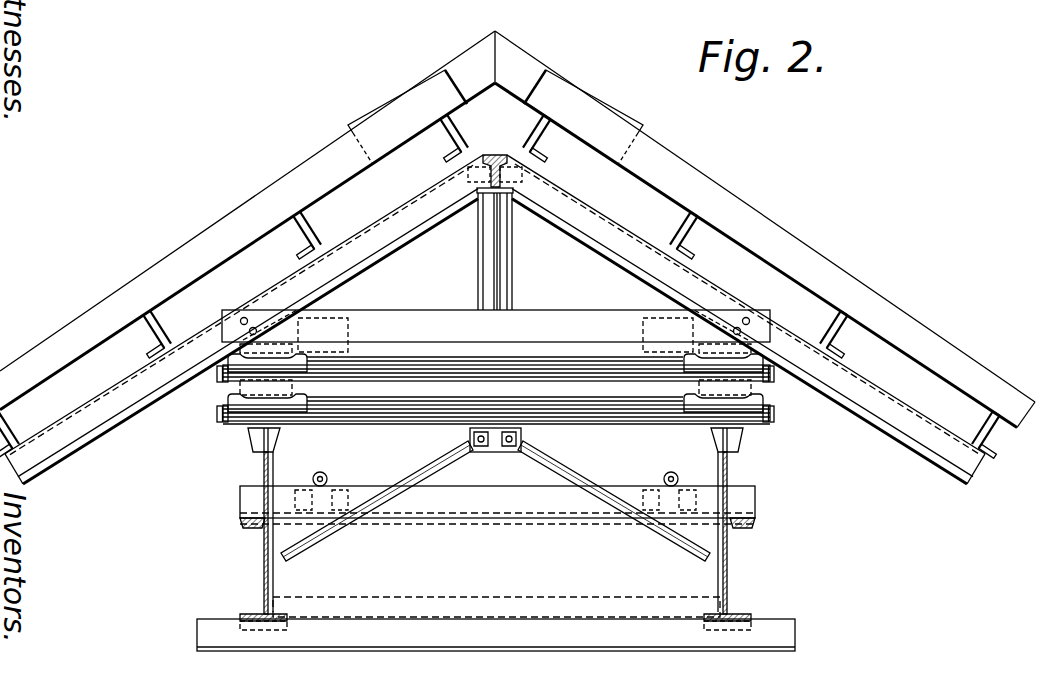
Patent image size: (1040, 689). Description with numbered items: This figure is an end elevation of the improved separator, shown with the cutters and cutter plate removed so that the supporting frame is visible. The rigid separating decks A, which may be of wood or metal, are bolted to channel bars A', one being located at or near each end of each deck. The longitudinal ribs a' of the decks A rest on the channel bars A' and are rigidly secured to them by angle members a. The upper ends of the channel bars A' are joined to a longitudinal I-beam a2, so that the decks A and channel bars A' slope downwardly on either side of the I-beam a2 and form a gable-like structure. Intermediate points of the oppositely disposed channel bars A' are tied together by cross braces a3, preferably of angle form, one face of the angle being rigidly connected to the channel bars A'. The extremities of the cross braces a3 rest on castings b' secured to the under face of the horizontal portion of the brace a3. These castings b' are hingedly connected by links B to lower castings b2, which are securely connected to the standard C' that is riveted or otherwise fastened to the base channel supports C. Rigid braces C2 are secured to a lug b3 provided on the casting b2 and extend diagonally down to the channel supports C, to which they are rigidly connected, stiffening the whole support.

The separating deck A is at (517, 229).
The channel bar A' is at (495, 335).
The angle member a is at (498, 264).
The longitudinal rib a' is at (511, 286).
The longitudinal I-beam a2 is at (493, 156).
The cross brace a3 is at (496, 331).
The link B is at (248, 388).
The casting b' is at (495, 310).
The casting b2 is at (240, 430).
The lug b3 is at (497, 453).
The base channel support C is at (492, 541).
The standard C' is at (480, 544).
The rigid brace C2 is at (370, 500).